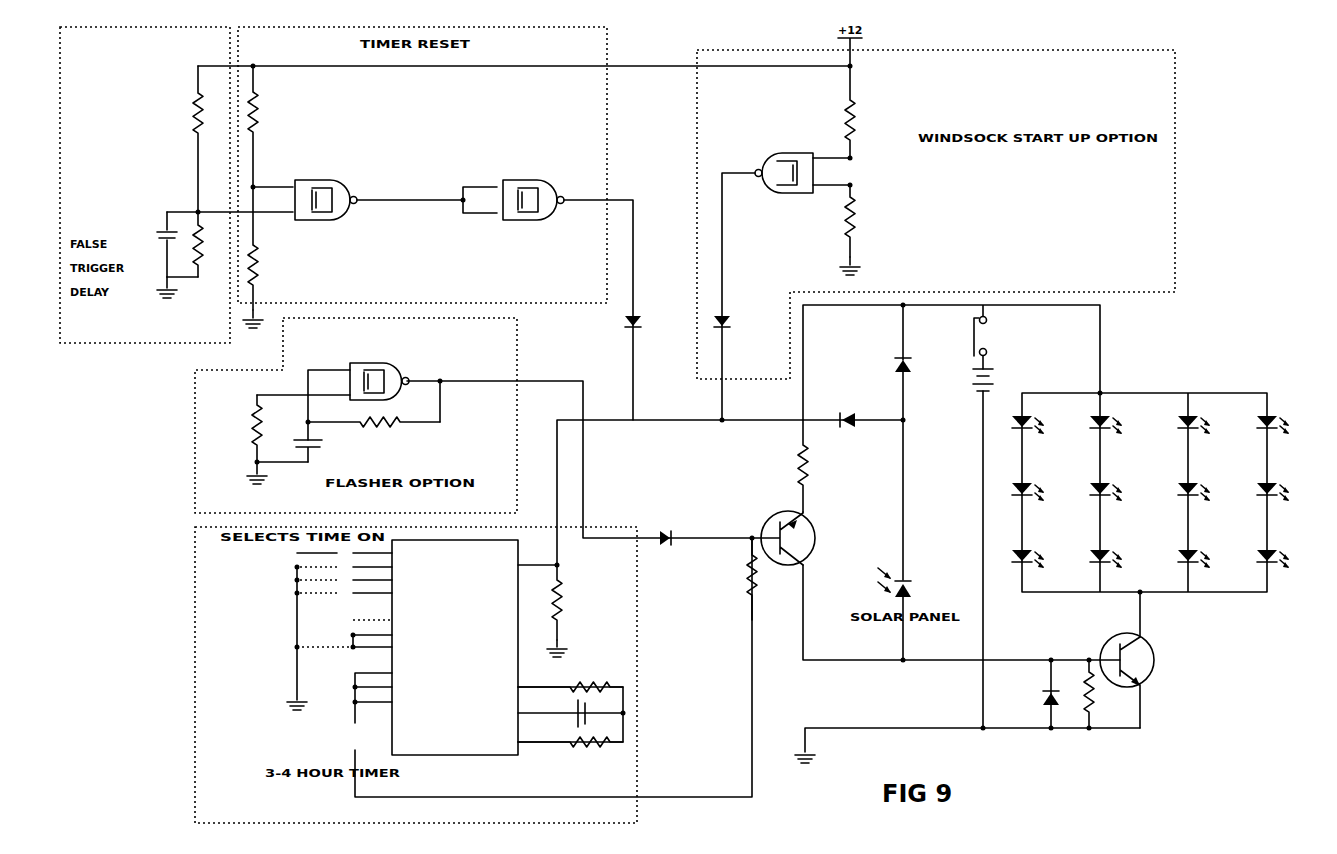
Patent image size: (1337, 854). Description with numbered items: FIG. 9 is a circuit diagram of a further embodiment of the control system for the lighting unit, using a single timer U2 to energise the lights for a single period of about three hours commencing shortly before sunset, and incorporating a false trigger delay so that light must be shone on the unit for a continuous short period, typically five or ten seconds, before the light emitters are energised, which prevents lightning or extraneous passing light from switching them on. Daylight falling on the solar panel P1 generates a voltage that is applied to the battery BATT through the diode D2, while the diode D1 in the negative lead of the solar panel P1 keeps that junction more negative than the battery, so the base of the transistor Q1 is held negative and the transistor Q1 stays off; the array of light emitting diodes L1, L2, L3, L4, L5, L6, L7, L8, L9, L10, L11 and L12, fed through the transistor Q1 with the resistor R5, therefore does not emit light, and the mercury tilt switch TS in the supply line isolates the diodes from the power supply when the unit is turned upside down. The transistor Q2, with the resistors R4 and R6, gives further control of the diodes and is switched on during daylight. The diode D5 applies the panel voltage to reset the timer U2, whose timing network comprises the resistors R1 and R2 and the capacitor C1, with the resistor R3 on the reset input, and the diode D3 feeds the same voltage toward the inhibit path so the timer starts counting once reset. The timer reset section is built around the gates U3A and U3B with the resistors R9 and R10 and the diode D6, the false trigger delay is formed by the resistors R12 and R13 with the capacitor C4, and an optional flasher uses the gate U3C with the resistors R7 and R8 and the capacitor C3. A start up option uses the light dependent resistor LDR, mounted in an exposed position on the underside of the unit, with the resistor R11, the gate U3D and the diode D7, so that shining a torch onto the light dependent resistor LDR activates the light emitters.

The resistor 1M R1 is at (570, 681).
The resistor 120K R2 is at (570, 752).
The resistor 33K R3 is at (571, 602).
The resistor 10K R4 is at (736, 579).
The resistor 100K R5 is at (1106, 694).
The resistor 2K2 R6 is at (820, 466).
The resistor R7 is at (374, 437).
The resistor 470K R8 is at (235, 428).
The resistor 82K R9 is at (265, 126).
The resistor 100K R10 is at (271, 248).
The resistor 470K R11 is at (874, 112).
The resistor 200K R12 is at (179, 139).
The resistor 680K R13 is at (204, 256).
The capacitor 470N C1 is at (581, 712).
The capacitor 10U C3 is at (324, 448).
The capacitor 22U C4 is at (152, 236).
The diode D1 is at (1029, 694).
The diode D2 is at (869, 355).
The diode D3 is at (666, 527).
The diode D5 is at (832, 408).
The diode 518 D6 is at (651, 318).
The diode 518 D7 is at (741, 318).
The timer U2 is at (454, 635).
The 4093 NAND gate A U3A is at (325, 183).
The NAND gate U3B is at (532, 183).
The NAND gate U3C is at (382, 367).
The 4093 NAND gate D U3D is at (786, 156).
The transistor Q1 is at (1151, 680).
The transistor Q2 is at (804, 538).
The solar panel P1 is at (909, 582).
The mercury tilt switch TS is at (1020, 336).
The 12V battery BATT is at (1005, 383).
The light dependent resistor LDR is at (871, 221).
The light emitting diode L1 is at (1046, 557).
The light emitting diode L2 is at (1046, 490).
The light emitting diode L3 is at (1046, 423).
The light emitting diode L4 is at (1124, 423).
The light emitting diode L5 is at (1124, 490).
The light emitting diode L6 is at (1124, 557).
The light emitting diode L7 is at (1290, 557).
The light emitting diode L8 is at (1290, 490).
The light emitting diode L9 is at (1290, 423).
The light emitting diode L10 is at (1211, 423).
The light emitting diode L11 is at (1211, 490).
The light emitting diode L12 is at (1211, 557).